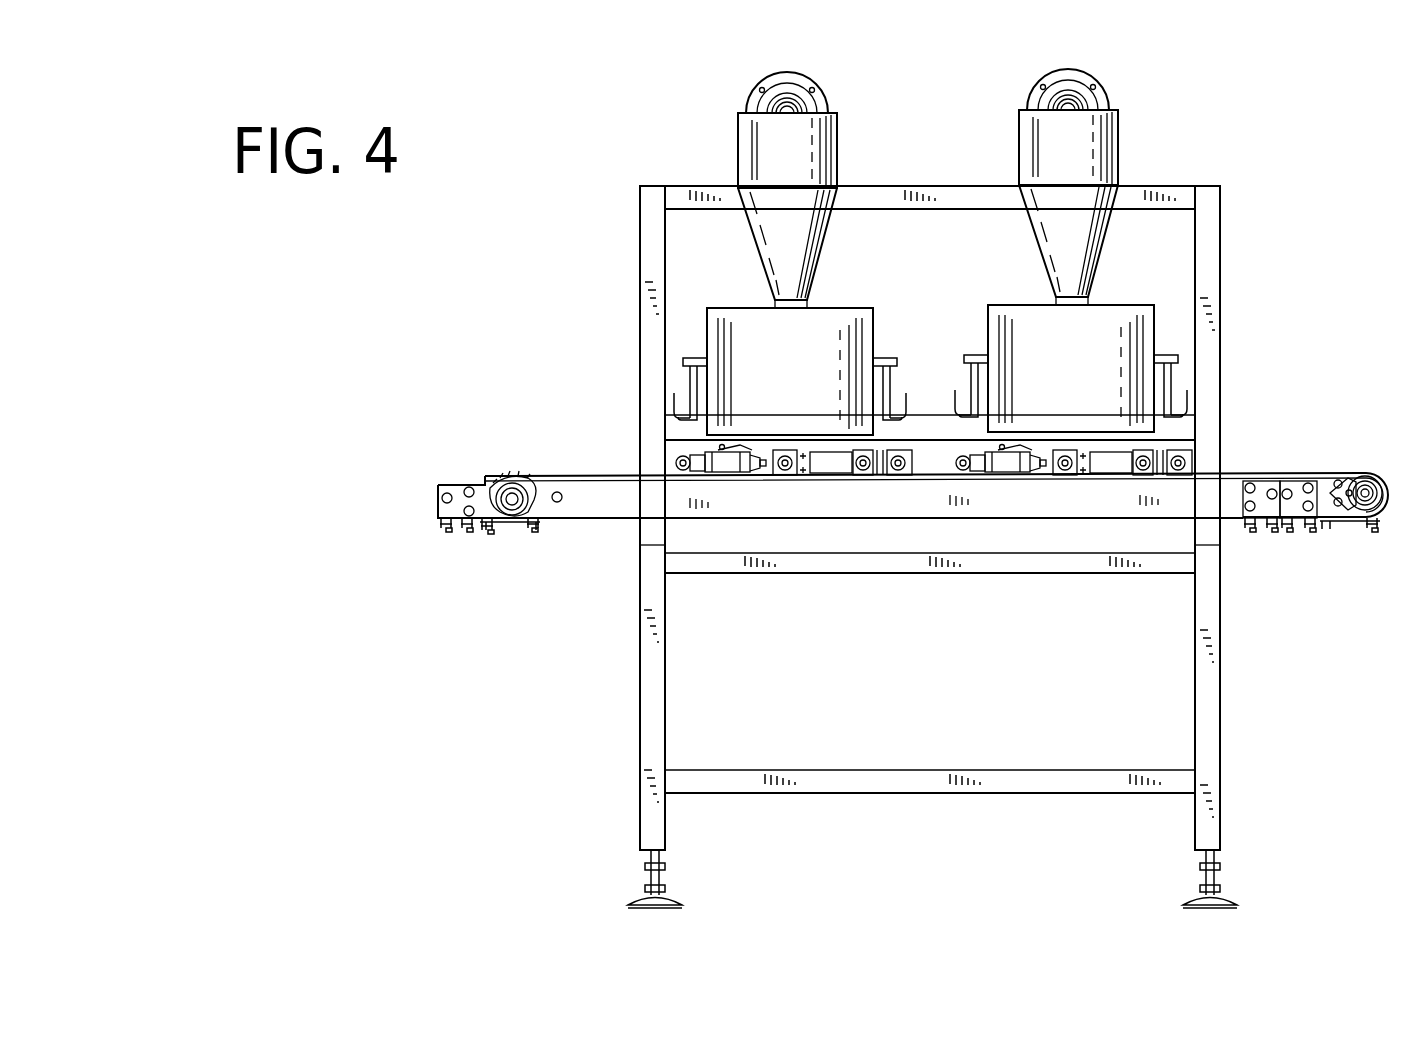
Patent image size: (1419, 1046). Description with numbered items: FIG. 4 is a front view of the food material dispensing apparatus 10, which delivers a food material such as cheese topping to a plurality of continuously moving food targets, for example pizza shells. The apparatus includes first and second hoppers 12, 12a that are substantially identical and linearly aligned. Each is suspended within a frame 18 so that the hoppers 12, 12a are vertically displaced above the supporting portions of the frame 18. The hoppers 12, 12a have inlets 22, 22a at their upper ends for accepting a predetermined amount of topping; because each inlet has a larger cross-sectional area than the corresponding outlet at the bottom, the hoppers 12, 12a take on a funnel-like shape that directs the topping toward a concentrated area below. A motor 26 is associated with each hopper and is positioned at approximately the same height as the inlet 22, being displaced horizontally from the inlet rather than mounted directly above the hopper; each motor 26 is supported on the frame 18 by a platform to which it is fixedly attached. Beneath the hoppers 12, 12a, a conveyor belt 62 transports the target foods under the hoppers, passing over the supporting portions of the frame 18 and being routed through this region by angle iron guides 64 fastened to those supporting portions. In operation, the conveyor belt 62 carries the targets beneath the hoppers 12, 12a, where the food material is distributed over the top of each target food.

The food material dispensing apparatus 10 is at (575, 212).
The first hopper 12 is at (734, 176).
The second hopper 12a is at (1009, 172).
The frame 18 is at (1224, 296).
The inlet 22 is at (734, 114).
The inlet 22a is at (1015, 111).
The motor 26 is at (848, 100).
The conveyor belt 62 is at (565, 466).
The angle iron guides 64 is at (608, 508).